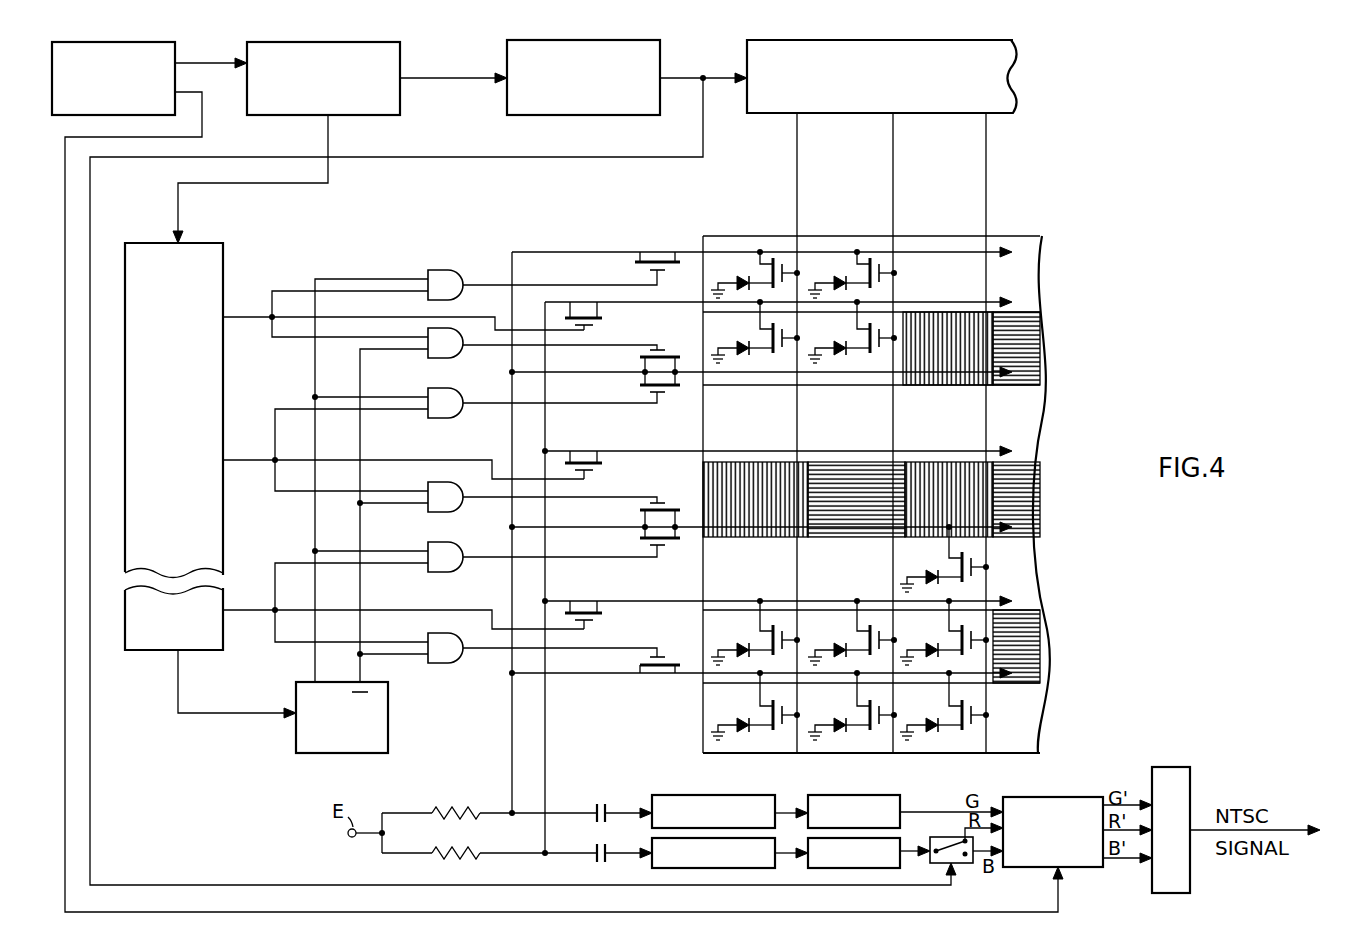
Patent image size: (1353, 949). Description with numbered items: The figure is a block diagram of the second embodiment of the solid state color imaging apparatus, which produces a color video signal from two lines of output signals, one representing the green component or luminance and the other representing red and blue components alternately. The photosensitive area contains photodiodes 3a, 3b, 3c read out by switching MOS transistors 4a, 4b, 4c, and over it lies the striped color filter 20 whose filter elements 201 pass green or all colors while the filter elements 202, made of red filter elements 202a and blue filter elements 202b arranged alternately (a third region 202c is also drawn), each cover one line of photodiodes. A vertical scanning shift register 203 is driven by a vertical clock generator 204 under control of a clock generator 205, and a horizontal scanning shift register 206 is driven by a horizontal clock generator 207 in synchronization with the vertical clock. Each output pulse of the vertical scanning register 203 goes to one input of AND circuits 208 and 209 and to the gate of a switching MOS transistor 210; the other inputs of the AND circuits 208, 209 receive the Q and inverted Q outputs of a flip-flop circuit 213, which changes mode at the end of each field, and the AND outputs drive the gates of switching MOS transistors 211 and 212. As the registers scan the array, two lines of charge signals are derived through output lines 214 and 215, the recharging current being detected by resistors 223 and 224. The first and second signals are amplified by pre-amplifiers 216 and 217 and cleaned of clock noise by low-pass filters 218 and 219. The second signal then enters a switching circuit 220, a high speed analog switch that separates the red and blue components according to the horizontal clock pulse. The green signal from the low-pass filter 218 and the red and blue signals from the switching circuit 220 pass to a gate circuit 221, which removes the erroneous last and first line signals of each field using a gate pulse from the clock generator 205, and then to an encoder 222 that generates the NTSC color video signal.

The striped color filter 20 is at (1043, 690).
The filter elements 201 is at (1030, 284).
The filter elements 202 is at (1038, 348).
The red filter elements 202a is at (752, 473).
The blue filter elements 202b is at (843, 473).
The third color filter element 202c is at (937, 473).
The vertical scanning shift register 203 is at (142, 252).
The vertical clock generator 204 is at (395, 59).
The clock generator 205 is at (165, 59).
The horizontal scanning shift register 206 is at (1022, 80).
The horizontal clock generator 207 is at (660, 52).
The AND circuits 208 is at (437, 275).
The AND circuits 209 is at (437, 352).
The switching MOS transistor 210 is at (580, 307).
The switching MOS transistor 211 is at (663, 254).
The switching MOS transistor 212 is at (672, 352).
The flip-flop circuit 213 is at (388, 713).
The output line 214 is at (547, 731).
The output line 215 is at (512, 730).
The pre-amplifier 216 is at (735, 795).
The pre-amplifier 217 is at (665, 868).
The low-pass filter 218 is at (857, 793).
The low-pass filter 219 is at (884, 869).
The switching circuit 220 is at (939, 836).
The gate circuit 221 is at (1033, 797).
The encoder 222 is at (1193, 787).
The resistor 223 is at (453, 802).
The resistor 224 is at (473, 848).
The photodiode 3a is at (743, 278).
The photodiode 3b is at (743, 345).
The photodiode 3c is at (840, 345).
The switching MOS transistor 4a is at (777, 255).
The switching MOS transistor 4b is at (775, 353).
The switching MOS transistor 4c is at (868, 353).